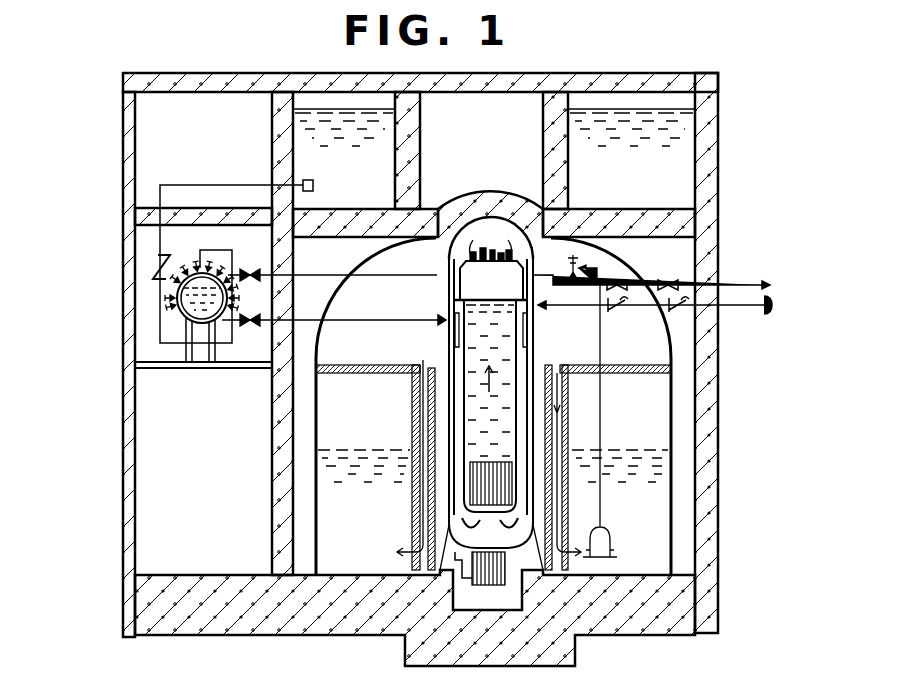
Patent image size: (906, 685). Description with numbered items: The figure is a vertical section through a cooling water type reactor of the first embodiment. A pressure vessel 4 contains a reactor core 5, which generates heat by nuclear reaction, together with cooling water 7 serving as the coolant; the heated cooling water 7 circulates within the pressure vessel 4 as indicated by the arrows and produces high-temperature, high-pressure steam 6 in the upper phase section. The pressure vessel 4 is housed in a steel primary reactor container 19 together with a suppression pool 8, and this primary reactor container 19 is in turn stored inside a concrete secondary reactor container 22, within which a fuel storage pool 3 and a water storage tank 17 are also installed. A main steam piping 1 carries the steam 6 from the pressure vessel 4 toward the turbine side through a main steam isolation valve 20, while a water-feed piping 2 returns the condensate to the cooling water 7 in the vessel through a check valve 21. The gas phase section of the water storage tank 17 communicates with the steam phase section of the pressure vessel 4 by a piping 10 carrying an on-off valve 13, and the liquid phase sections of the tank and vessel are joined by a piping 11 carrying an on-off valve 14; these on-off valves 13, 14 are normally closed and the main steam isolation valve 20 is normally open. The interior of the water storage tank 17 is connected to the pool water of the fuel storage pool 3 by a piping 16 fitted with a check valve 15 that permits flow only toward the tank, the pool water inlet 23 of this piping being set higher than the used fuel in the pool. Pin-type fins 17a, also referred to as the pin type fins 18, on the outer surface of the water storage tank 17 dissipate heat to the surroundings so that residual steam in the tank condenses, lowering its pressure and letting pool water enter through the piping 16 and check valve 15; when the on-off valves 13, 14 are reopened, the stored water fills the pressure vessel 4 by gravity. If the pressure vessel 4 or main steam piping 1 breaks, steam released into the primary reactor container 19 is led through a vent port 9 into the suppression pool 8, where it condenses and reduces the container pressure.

The main steam piping 1 is at (748, 280).
The water-feed piping 2 is at (748, 312).
The fuel storage pool 3 is at (388, 156).
The pressure vessel 4 is at (533, 350).
The reactor core 5 is at (487, 515).
The steam 6 is at (492, 232).
The cooling water 7 is at (452, 303).
The suppression pool 8 is at (657, 492).
The vent port 9 is at (412, 545).
The piping 10 is at (366, 278).
The piping 11 is at (366, 323).
The on-off valve 13 is at (249, 268).
The on-off valve 14 is at (247, 327).
The check valve 15 is at (153, 272).
The piping 16 is at (207, 183).
The water storage tank 17 is at (186, 330).
The pin-type fins 17a is at (160, 323).
The pin type fins 18 is at (195, 252).
The primary reactor container 19 is at (673, 416).
The main steam isolation valve 20 is at (668, 280).
The check valve 21 is at (676, 312).
The secondary reactor container 22 is at (718, 375).
The pool water inlet 23 is at (314, 187).